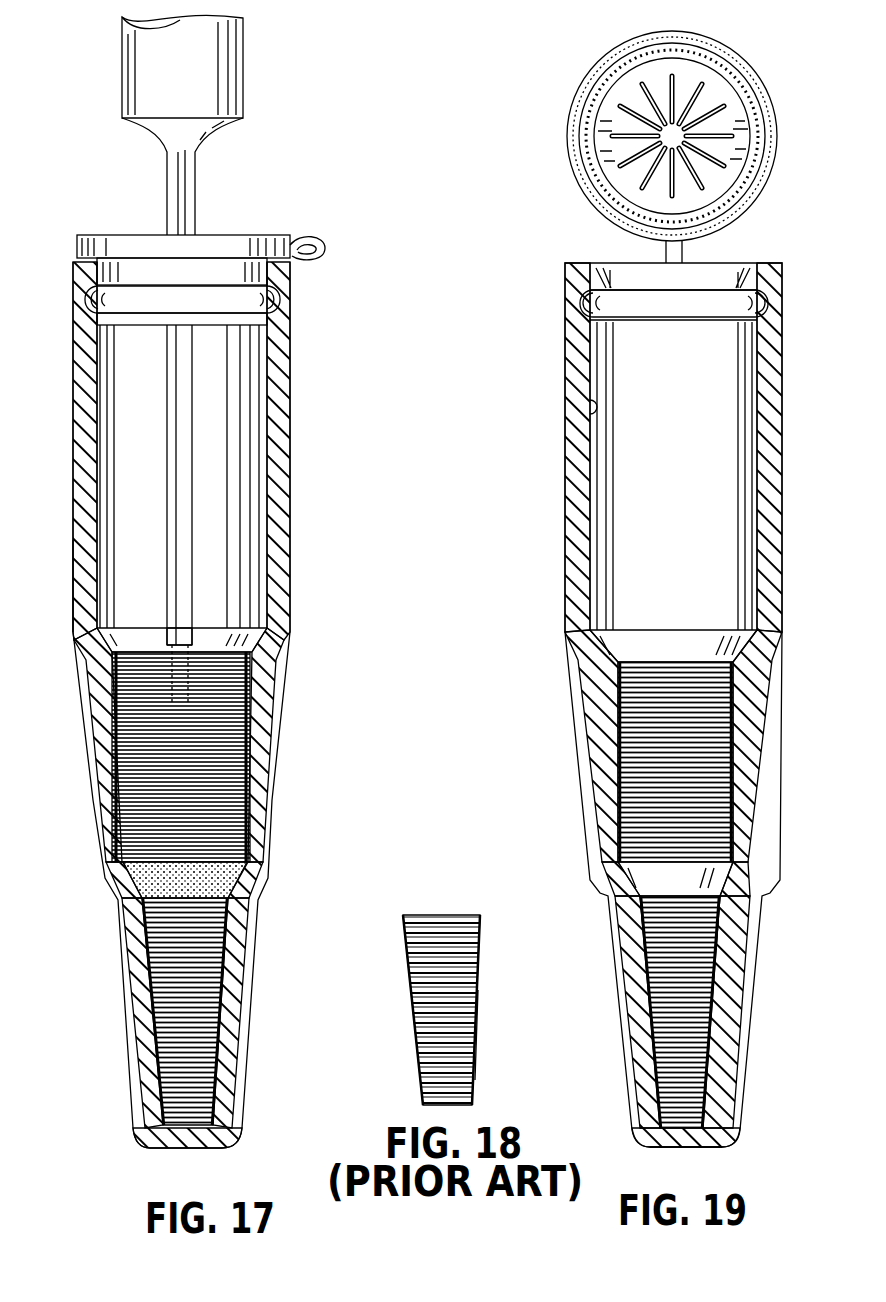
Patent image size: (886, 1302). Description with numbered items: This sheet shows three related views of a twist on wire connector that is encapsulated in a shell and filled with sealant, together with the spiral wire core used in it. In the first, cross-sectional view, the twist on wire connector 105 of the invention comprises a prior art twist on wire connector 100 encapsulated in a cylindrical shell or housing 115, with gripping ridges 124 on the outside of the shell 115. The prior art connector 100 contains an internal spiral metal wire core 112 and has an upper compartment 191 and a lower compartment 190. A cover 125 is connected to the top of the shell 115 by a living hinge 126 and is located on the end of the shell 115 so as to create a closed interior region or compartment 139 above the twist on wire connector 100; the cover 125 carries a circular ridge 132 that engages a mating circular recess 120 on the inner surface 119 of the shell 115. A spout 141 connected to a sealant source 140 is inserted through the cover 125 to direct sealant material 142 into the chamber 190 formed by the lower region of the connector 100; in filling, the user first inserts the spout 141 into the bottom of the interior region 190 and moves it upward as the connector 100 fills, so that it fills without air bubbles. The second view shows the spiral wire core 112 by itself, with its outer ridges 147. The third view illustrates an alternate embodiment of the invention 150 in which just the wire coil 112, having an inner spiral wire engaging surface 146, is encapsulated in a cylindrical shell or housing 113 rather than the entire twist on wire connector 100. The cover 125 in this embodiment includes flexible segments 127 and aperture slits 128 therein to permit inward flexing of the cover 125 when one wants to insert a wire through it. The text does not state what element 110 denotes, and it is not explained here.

In FIG. 17, the twist on wire connector 100 is at (276, 650).
In FIG. 17, the twist on wire connector 105 is at (62, 516).
In FIG. 17, the vial body 110 is at (76, 597).
In FIG. 17, the spiral metal wire core 112 is at (236, 884).
In FIG. 18, the spiral metal wire core 112 is at (432, 904).
In FIG. 19, the spiral metal wire core 112 is at (700, 932).
In FIG. 19, the cylindrical shell or housing 113 is at (760, 732).
In FIG. 17, the cylindrical shell or housing 115 is at (272, 478).
In FIG. 19, the inner surface 119 is at (594, 414).
In FIG. 17, the circular recess 120 is at (86, 314).
In FIG. 19, the circular recess 120 is at (585, 320).
In FIG. 17, the gripping ridges 124 is at (86, 750).
In FIG. 17, the cover 125 is at (106, 230).
In FIG. 19, the cover 125 is at (571, 103).
In FIG. 17, the living hinge 126 is at (310, 240).
In FIG. 19, the living hinge 126 is at (690, 260).
In FIG. 19, the flexible segments 127 is at (658, 192).
In FIG. 19, the aperture slits 128 is at (705, 188).
In FIG. 17, the circular ridge 132 is at (98, 292).
In FIG. 19, the circular ridge 132 is at (615, 220).
In FIG. 17, the upper compartment 139 is at (118, 499).
In FIG. 19, the upper compartment 139 is at (662, 454).
In FIG. 17, the sealant source 140 is at (150, 83).
In FIG. 17, the spout 141 is at (197, 186).
In FIG. 17, the sealant material 142 is at (163, 650).
In FIG. 19, the inner spiral wire engaging surface 146 is at (725, 1140).
In FIG. 18, the outer ridges 147 is at (474, 1057).
In FIG. 19, the alternate embodiment of the invention 150 is at (564, 606).
In FIG. 17, the lower compartment 190 is at (152, 952).
In FIG. 19, the lower compartment 190 is at (690, 1000).
In FIG. 17, the upper compartment 191 is at (125, 700).
In FIG. 19, the upper compartment 191 is at (706, 702).